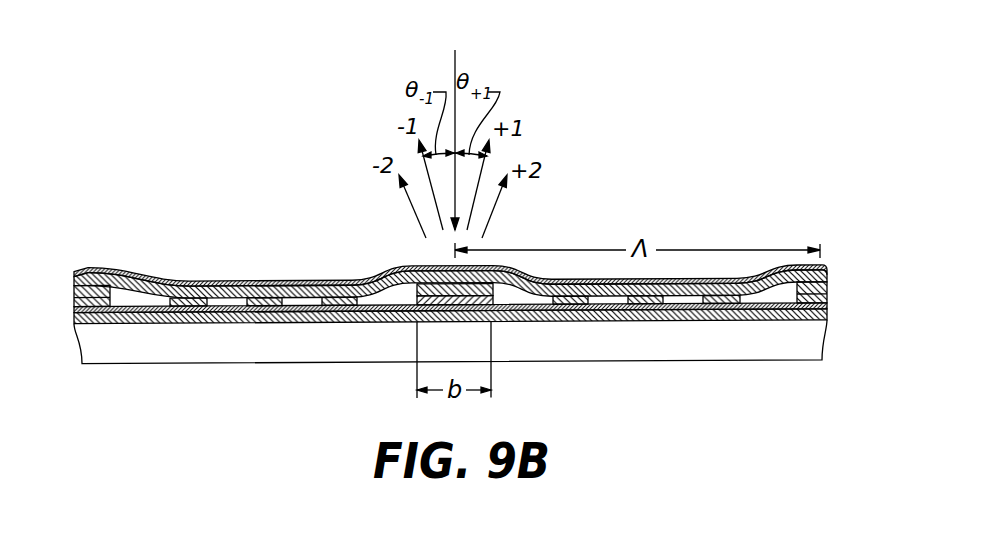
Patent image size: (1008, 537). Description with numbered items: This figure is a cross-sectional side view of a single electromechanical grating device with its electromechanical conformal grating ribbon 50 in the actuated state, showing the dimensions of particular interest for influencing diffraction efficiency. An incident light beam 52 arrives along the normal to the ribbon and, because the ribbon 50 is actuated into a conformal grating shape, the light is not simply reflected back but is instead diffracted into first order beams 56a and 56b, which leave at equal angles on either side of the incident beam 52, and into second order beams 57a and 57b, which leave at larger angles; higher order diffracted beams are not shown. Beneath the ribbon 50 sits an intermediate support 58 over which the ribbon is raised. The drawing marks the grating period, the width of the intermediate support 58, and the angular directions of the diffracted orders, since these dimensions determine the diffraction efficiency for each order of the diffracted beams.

The electromechanical conformal grating ribbon 50 is at (231, 279).
The incident light beam 52 is at (455, 63).
The first order beam 56a is at (487, 158).
The first order beam 56b is at (423, 158).
The second order beam 57a is at (492, 212).
The second order beam 57b is at (413, 208).
The intermediate support 58 is at (422, 262).